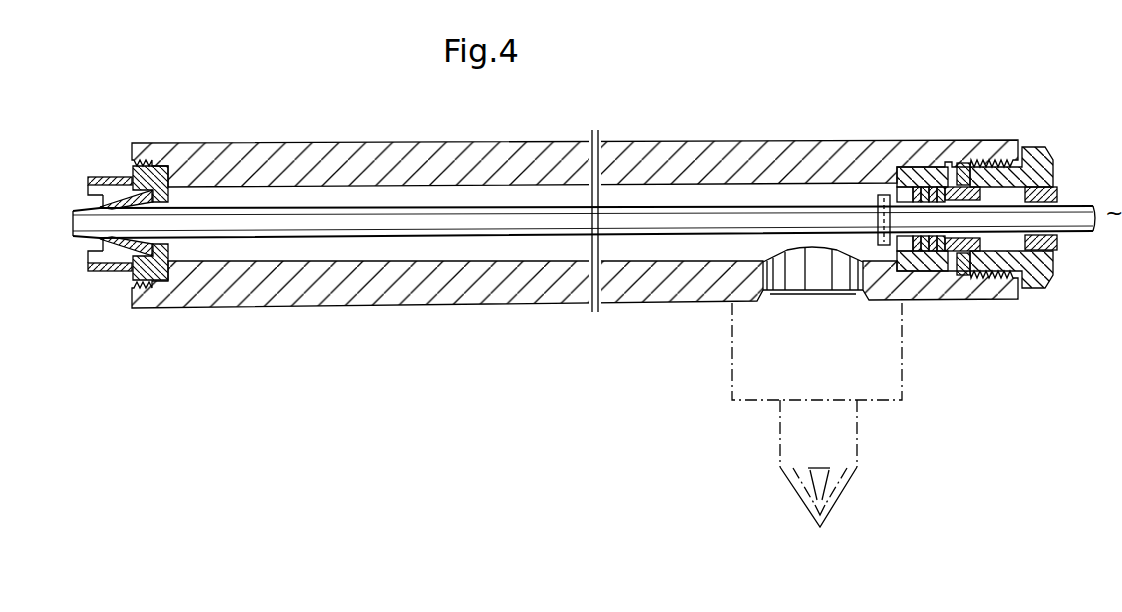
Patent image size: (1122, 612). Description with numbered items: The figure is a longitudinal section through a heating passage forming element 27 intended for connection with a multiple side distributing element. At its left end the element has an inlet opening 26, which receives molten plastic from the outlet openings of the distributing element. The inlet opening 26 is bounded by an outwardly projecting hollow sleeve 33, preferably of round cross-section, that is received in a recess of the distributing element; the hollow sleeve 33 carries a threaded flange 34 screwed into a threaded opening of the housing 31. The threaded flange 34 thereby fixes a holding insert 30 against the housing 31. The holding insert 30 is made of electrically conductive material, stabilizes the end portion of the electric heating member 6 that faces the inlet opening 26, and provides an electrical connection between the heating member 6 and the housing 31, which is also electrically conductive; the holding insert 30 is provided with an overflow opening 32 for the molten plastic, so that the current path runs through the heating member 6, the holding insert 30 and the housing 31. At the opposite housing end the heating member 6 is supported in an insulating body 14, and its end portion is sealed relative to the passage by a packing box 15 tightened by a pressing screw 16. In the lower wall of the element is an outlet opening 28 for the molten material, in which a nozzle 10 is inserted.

The heating passage forming element 27 is at (650, 136).
The housing 31 is at (333, 155).
The electric heating member 6 is at (785, 210).
The holding insert 30 is at (145, 196).
The threaded flange 34 is at (150, 172).
The overflow opening 32 is at (90, 258).
The hollow sleeve 33 is at (100, 177).
The inlet opening 26 is at (87, 197).
The insulating body 14 is at (924, 176).
The packing box 15 is at (926, 251).
The pressing screw 16 is at (1040, 160).
The outlet opening 28 is at (790, 277).
The nozzle 10 is at (890, 380).